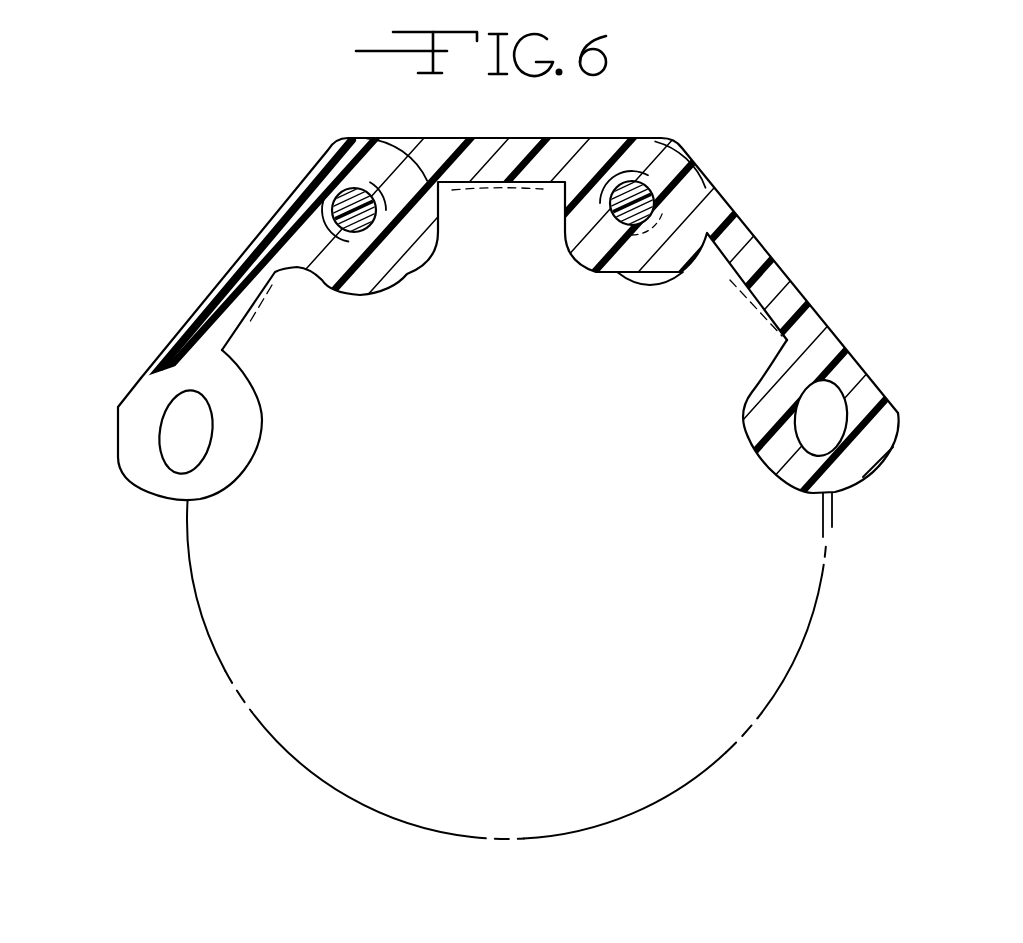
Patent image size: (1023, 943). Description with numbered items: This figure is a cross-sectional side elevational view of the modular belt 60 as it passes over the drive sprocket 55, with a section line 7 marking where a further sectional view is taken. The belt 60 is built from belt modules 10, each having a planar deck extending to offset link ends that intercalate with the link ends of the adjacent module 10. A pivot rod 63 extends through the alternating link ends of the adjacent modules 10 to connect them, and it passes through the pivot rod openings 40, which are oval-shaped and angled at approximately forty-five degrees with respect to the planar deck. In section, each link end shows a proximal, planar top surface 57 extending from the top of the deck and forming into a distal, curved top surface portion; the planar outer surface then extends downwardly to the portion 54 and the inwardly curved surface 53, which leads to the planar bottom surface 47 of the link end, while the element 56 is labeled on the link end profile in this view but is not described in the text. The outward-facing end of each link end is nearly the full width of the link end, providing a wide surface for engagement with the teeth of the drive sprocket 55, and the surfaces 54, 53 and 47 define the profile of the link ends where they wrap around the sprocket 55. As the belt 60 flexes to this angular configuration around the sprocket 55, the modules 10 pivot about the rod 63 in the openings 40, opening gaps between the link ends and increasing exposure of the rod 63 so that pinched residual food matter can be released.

The modular belt 60 is at (309, 132).
The belt module 10 is at (245, 258).
The pivot rod 63 is at (306, 173).
The pivot rod openings 40 is at (178, 435).
The right clamp end 56 is at (900, 424).
The planar bottom surface 47 is at (763, 460).
The portion 54 is at (867, 466).
The proximal planar top surface 57 is at (870, 372).
The inwardly curved surface 53 is at (830, 537).
The drive sprocket 55 is at (689, 736).
The section line 7 is at (418, 403).